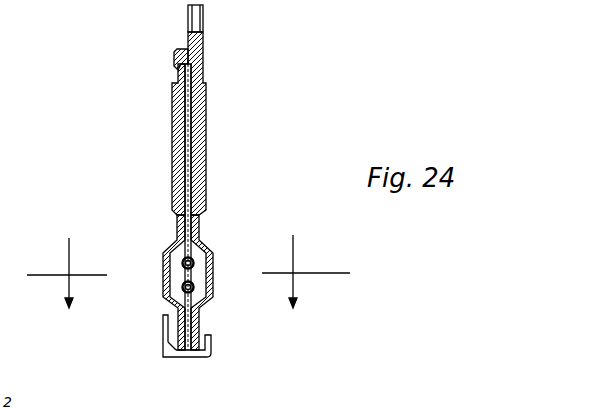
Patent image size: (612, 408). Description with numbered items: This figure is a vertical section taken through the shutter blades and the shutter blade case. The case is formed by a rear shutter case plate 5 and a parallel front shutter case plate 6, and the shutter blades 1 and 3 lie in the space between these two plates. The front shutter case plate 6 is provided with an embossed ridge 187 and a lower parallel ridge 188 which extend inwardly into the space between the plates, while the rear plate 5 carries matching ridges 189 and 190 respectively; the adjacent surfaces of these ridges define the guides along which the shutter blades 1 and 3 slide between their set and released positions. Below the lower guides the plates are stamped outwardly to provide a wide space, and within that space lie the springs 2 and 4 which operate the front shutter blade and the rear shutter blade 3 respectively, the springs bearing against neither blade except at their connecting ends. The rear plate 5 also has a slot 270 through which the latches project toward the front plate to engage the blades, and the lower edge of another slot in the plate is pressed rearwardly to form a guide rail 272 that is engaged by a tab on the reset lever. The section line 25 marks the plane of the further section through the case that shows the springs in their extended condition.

The shutter blade 1 is at (206, 120).
The spring 2 is at (182, 288).
The shutter blade 3 is at (180, 140).
The spring 4 is at (182, 264).
The rear shutter case plate 5 is at (180, 49).
The front shutter case plate 6 is at (204, 50).
The section line 25— 25 is at (188, 271).
The embossed ridge 187 is at (205, 83).
The lower parallel ridge 188 is at (200, 225).
The matching ridge 189 is at (173, 84).
The matching ridge 190 is at (177, 225).
The slot 270 is at (173, 347).
The guide rail 272 is at (163, 331).